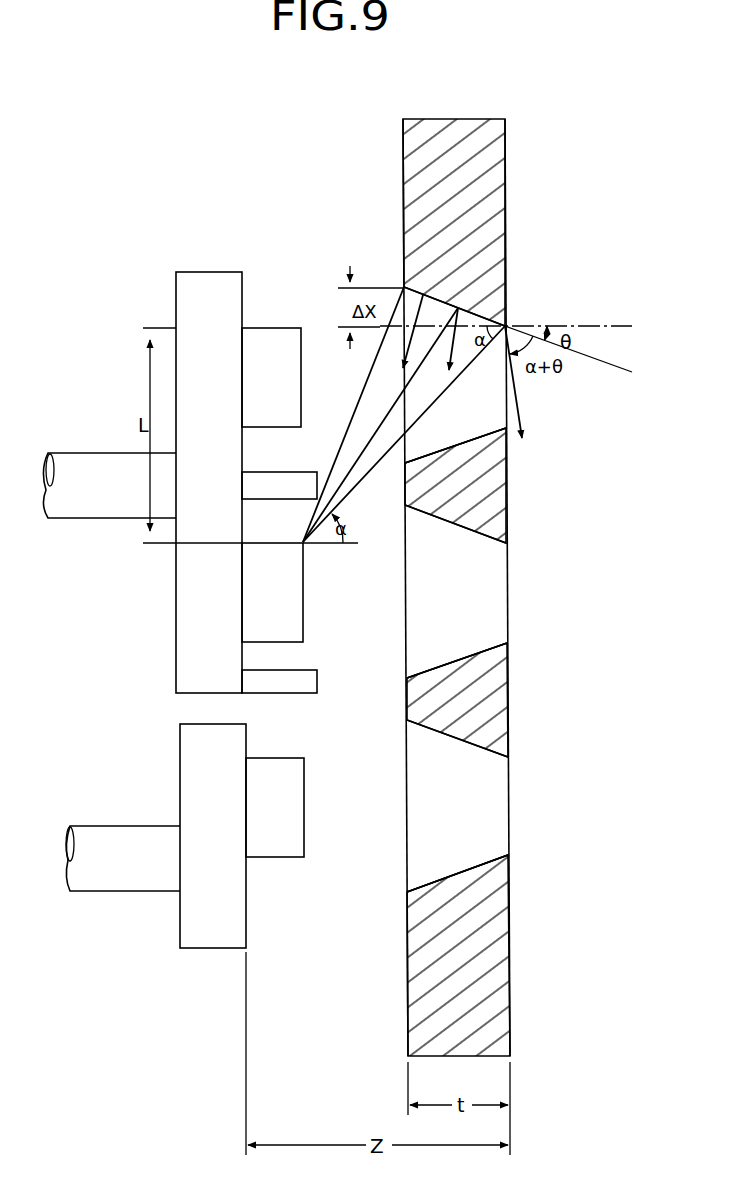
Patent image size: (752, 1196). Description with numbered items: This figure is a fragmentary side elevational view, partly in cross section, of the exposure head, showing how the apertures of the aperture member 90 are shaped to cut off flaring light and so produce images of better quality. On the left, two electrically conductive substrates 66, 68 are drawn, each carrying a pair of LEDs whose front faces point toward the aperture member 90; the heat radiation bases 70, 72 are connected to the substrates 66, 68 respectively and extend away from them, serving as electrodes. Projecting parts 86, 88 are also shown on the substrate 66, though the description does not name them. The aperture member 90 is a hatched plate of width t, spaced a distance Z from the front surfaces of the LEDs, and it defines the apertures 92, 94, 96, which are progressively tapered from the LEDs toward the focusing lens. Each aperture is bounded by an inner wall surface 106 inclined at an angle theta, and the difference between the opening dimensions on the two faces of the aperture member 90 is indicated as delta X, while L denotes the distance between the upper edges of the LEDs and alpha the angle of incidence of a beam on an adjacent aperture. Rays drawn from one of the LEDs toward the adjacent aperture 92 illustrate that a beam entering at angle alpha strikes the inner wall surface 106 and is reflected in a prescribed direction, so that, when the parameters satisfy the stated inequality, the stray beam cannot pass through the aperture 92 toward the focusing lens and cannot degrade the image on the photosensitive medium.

The electrically conductive substrate 66 is at (210, 291).
The electrically conductive substrate 68 is at (200, 938).
The heat radiation base 70 is at (83, 468).
The heat radiation base 72 is at (112, 883).
The projection 86 is at (263, 478).
The projection 88 is at (313, 688).
The aperture member 90 is at (490, 153).
The aperture 92 is at (490, 400).
The aperture 94 is at (490, 582).
The aperture 96 is at (487, 790).
The inner wall surface 106 is at (480, 430).